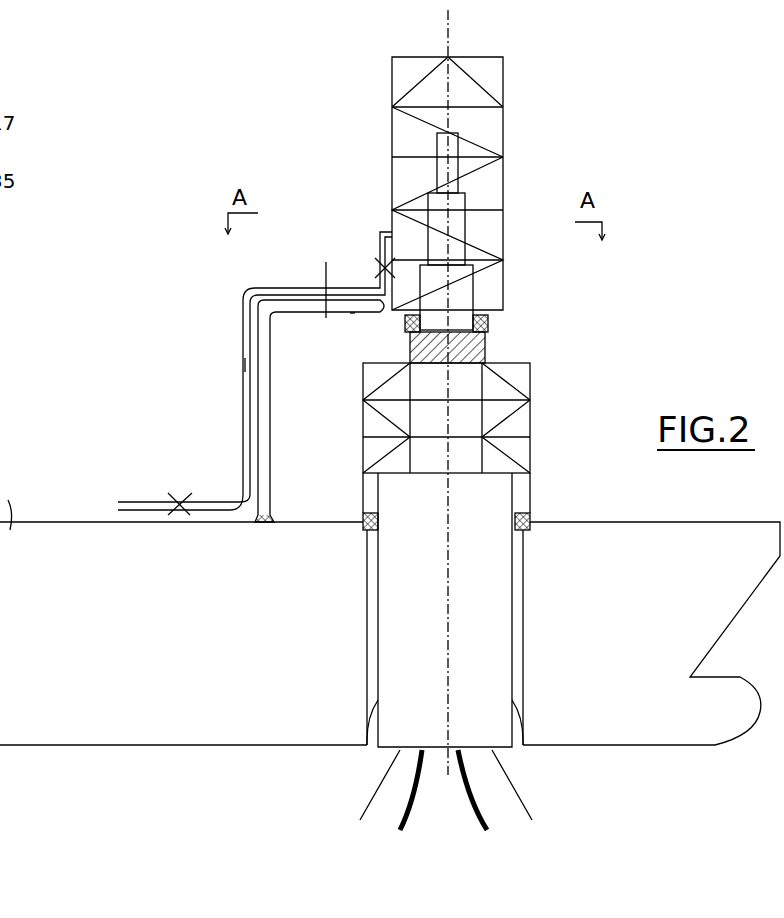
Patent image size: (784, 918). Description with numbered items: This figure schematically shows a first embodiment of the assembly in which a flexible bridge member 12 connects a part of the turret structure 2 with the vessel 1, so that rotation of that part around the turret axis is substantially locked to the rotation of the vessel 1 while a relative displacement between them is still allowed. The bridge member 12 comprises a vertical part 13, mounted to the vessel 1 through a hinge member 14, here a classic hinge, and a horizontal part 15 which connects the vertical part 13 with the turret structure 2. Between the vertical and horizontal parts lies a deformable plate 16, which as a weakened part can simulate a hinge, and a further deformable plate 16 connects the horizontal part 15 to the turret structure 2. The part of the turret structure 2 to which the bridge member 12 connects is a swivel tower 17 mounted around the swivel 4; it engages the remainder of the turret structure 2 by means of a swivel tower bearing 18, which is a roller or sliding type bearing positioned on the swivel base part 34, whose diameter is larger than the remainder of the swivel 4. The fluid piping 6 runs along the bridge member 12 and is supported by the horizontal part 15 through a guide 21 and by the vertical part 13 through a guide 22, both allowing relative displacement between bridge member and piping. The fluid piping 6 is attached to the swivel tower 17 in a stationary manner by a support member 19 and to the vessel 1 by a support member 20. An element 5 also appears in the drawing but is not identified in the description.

The vessel 1 is at (390, 633).
The turret structure 2 is at (533, 415).
The swivel 4 is at (465, 230).
The cable 5 is at (413, 228).
The fluid piping 6 is at (298, 290).
The flexible bridge member 12 is at (276, 305).
The vertical part 13 is at (270, 432).
The hinge member 14 is at (268, 518).
The horizontal part 15 is at (351, 314).
The deformable plate 16 is at (262, 292).
The swivel tower 17 is at (503, 128).
The swivel tower bearing 18 is at (480, 322).
The support member 19 is at (385, 268).
The support member 20 is at (178, 503).
The guide 21 is at (327, 278).
The guide 22 is at (250, 365).
The swivel base part 34 is at (478, 345).